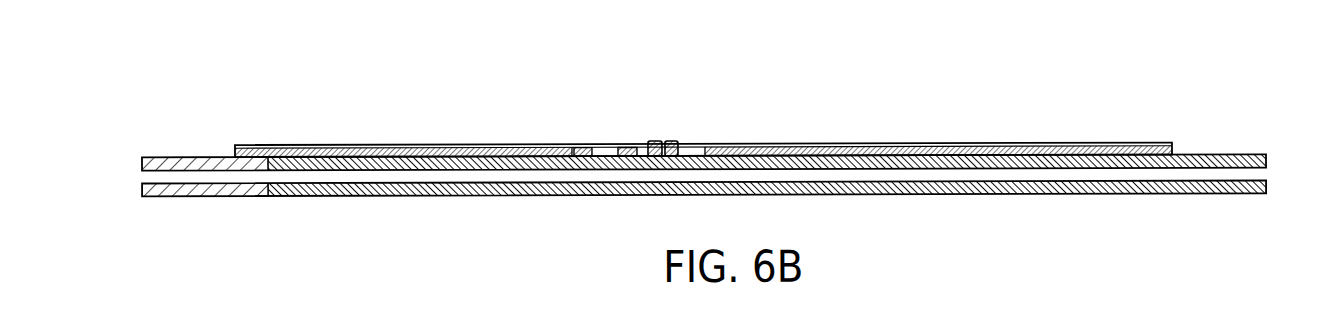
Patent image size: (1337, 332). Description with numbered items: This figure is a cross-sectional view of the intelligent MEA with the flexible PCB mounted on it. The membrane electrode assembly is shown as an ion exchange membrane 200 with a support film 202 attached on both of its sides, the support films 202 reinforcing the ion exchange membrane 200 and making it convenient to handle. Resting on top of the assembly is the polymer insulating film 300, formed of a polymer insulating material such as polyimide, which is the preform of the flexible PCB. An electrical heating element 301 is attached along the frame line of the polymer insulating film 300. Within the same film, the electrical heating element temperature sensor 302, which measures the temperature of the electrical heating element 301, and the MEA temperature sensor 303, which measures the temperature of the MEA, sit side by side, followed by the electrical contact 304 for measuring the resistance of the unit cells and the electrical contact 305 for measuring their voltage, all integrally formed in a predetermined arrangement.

The ion exchange membrane 200 is at (736, 175).
The support film 202 is at (1252, 156).
The polymer insulating film 300 is at (720, 107).
The electrical heating element 301 is at (853, 150).
The electrical heating element temperature sensor 302 is at (579, 149).
The MEA temperature sensor 303 is at (625, 149).
The electrical contact for measuring resistance 304 is at (672, 142).
The electrical contact for measuring voltage 305 is at (653, 142).